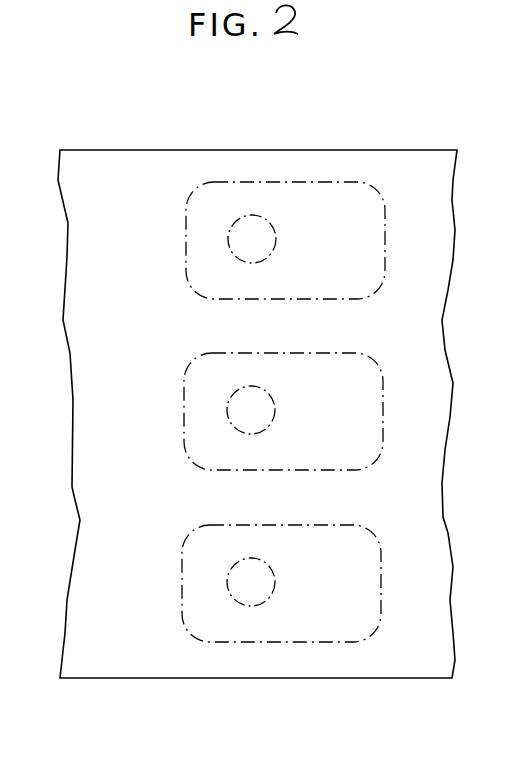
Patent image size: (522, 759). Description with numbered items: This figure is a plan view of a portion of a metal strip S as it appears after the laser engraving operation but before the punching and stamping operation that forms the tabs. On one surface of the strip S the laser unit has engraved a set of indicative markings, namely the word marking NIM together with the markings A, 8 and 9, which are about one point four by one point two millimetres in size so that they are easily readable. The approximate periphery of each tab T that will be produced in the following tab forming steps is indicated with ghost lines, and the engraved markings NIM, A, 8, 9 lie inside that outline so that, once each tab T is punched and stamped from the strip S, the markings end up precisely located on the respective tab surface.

The strip S is at (310, 149).
The tab T is at (396, 205).
The engraved marking 8 is at (219, 380).
The engraved marking 9 is at (218, 445).
The engraved marking A is at (281, 380).
The indicia NIM on tag NIM is at (281, 438).